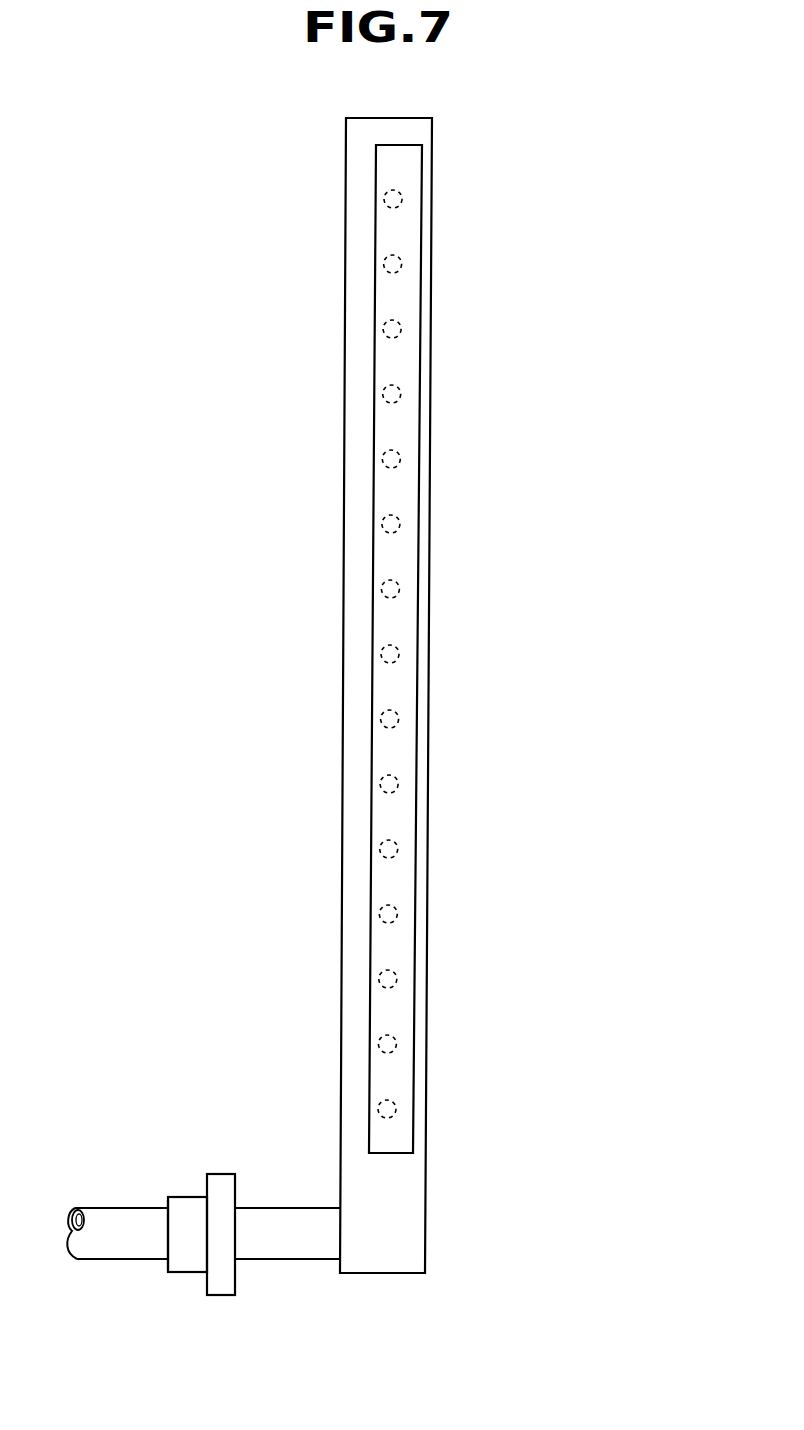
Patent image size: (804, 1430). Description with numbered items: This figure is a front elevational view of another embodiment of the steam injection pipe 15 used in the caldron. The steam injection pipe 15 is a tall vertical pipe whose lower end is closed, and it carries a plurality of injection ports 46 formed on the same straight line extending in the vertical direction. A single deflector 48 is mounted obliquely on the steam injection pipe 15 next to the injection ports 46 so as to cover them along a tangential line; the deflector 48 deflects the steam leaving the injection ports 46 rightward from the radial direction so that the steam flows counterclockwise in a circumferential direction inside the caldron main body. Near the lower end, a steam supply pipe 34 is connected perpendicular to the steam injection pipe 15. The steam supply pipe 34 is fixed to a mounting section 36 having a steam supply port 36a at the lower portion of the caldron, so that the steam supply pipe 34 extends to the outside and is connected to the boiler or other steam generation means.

The steam injection pipe 15 is at (357, 636).
The deflector 48 is at (403, 423).
The injection ports 46 is at (390, 268).
The steam supply pipe 34 is at (100, 1247).
The mounting section 36 is at (183, 1253).
The steam supply port 36a is at (163, 1231).